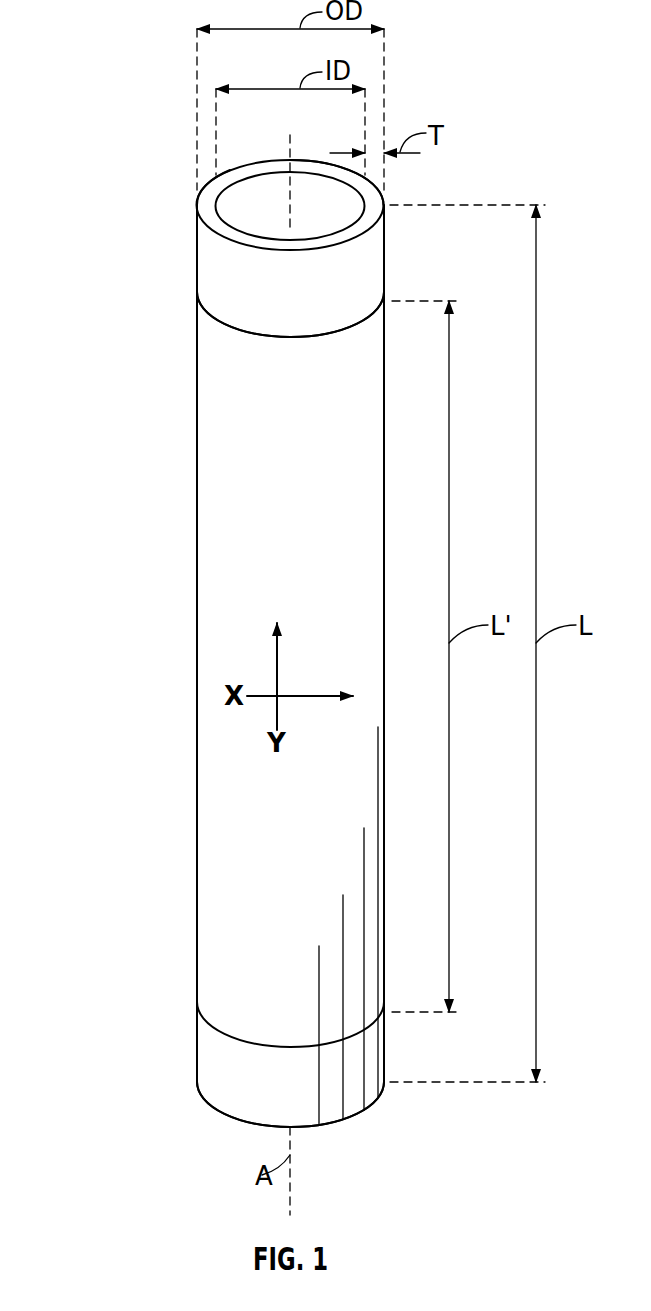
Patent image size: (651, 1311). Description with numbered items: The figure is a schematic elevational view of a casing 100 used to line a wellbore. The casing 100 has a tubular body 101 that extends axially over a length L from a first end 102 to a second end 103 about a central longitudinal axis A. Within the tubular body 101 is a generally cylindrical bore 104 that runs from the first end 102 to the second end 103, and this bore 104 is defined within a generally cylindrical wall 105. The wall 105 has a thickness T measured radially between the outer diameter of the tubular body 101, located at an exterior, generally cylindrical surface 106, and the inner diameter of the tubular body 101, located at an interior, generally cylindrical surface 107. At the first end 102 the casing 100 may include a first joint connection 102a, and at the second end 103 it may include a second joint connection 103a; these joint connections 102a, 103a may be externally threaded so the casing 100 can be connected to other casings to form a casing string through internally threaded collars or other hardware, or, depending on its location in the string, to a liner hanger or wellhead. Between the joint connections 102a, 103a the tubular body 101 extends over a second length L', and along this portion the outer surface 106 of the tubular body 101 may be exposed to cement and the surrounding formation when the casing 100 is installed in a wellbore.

The casing 100 is at (103, 52).
The tubular body 101 is at (197, 535).
The first end 102 is at (150, 252).
The first joint connection 102a is at (318, 300).
The second end 103 is at (175, 1062).
The second joint connection 103a is at (295, 1097).
The cylindrical bore 104 is at (263, 185).
The cylindrical wall 105 is at (308, 167).
The exterior cylindrical surface 106 is at (212, 903).
The interior cylindrical surface 107 is at (200, 197).